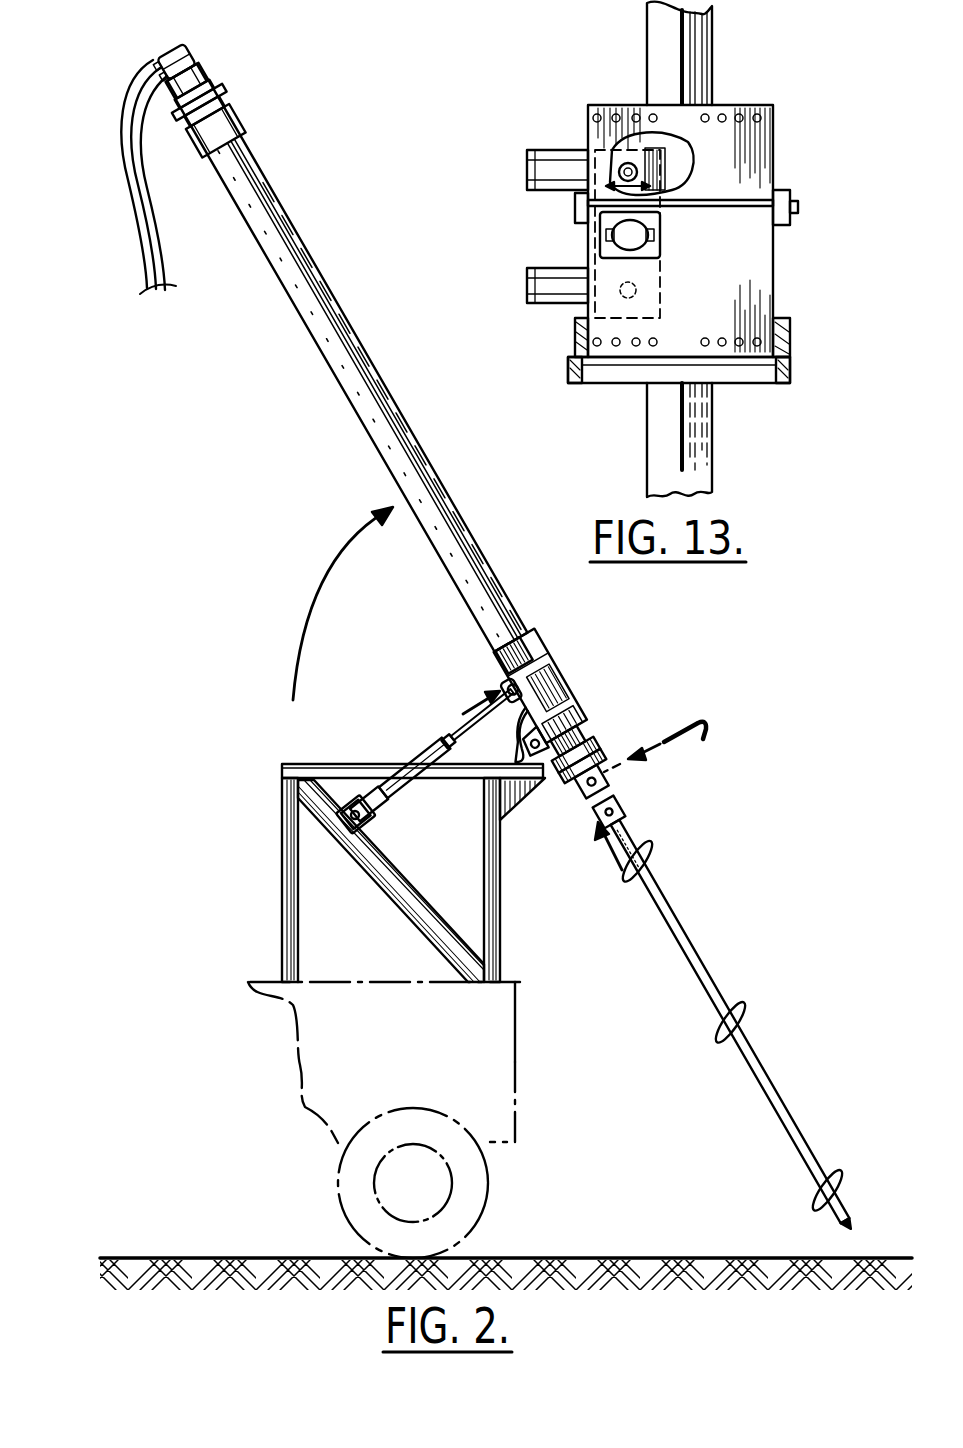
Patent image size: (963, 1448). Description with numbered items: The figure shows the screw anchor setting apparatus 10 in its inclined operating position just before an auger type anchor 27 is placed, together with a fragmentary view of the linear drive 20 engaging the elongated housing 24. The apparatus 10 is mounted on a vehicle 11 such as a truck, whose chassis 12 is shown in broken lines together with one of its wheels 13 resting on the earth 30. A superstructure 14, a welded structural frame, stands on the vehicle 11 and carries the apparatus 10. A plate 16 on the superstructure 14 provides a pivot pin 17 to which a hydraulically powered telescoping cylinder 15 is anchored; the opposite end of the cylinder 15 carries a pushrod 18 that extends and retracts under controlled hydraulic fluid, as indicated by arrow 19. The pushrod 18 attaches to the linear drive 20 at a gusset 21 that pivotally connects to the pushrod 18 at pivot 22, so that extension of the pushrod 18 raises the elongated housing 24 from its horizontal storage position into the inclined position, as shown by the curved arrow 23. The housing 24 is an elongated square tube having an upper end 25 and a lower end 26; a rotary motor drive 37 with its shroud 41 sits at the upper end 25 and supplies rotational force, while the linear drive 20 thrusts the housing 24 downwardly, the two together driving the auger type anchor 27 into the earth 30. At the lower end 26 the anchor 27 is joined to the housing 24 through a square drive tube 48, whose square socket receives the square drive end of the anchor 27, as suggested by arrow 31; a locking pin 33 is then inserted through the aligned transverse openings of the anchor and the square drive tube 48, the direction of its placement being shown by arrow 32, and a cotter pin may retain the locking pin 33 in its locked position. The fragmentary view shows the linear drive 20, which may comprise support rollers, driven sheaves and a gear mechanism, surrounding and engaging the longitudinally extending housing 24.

In FIG. 2, the screw anchor setting apparatus 10 is at (196, 397).
In FIG. 2, the vehicle 11 is at (517, 1062).
In FIG. 2, the chassis 12 is at (310, 1110).
In FIG. 2, the wheel 13 is at (480, 1200).
In FIG. 2, the superstructure 14 is at (285, 930).
In FIG. 2, the telescoping cylinder 15 is at (420, 752).
In FIG. 2, the plate 16 is at (356, 828).
In FIG. 2, the pivot pin 17 is at (368, 816).
In FIG. 2, the pushrod 18 is at (455, 720).
In FIG. 2, the arrow 19 is at (470, 705).
In FIG. 2, the linear drive 20 is at (572, 707).
In FIG. 13, the linear drive 20 is at (775, 160).
In FIG. 2, the gusset 21 is at (546, 680).
In FIG. 2, the pivot 22 is at (518, 688).
In FIG. 2, the arrow 23 is at (318, 600).
In FIG. 2, the elongated housing 24 is at (313, 287).
In FIG. 13, the elongated housing 24 is at (656, 50).
In FIG. 2, the upper end 25 is at (262, 170).
In FIG. 2, the lower end 26 is at (579, 757).
In FIG. 2, the auger type anchor 27 is at (770, 1082).
In FIG. 2, the earth 30 is at (195, 1258).
In FIG. 2, the arrow 31 is at (610, 858).
In FIG. 2, the arrow 32 is at (642, 750).
In FIG. 2, the locking pin 33 is at (693, 738).
In FIG. 2, the rotary motor drive 37 is at (184, 44).
In FIG. 2, the shroud 41 is at (236, 112).
In FIG. 2, the square drive tube 48 is at (585, 800).